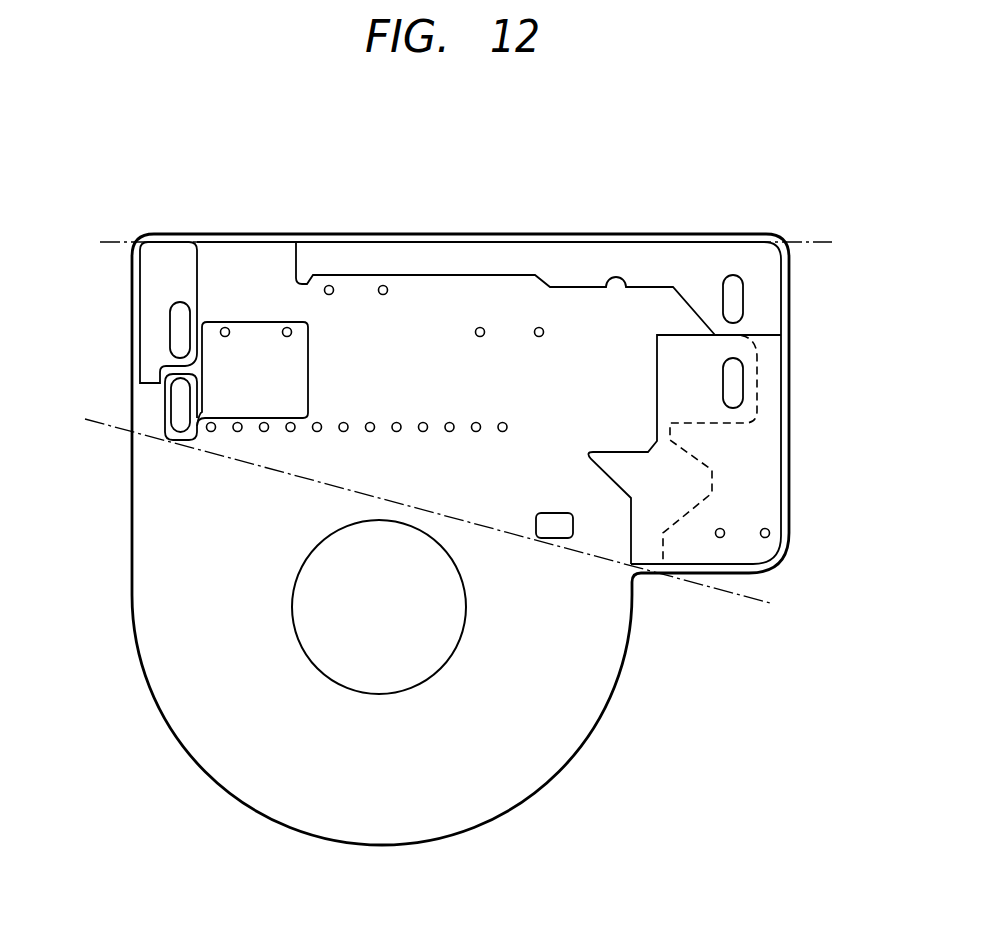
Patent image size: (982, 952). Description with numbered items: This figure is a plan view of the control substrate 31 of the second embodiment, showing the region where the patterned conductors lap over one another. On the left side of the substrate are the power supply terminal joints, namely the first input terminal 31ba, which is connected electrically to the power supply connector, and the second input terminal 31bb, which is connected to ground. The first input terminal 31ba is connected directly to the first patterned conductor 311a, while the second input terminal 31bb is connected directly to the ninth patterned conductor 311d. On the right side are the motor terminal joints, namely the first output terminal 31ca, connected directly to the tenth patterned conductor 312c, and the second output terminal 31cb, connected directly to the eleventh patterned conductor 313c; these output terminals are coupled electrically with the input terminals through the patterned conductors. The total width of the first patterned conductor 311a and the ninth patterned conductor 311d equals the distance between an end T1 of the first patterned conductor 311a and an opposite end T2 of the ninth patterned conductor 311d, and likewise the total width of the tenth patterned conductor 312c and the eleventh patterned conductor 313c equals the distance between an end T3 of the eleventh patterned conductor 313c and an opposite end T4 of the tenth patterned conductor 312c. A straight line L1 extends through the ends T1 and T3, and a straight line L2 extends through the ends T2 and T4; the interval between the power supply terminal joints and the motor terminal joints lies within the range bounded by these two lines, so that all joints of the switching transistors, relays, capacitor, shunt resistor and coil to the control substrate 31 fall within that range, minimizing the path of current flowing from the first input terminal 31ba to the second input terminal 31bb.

The control substrate 31 is at (545, 838).
The first patterned conductor 311a is at (247, 400).
The ninth patterned conductor 311d is at (157, 263).
The second input terminal 31bb is at (177, 330).
The first input terminal 31ba is at (173, 400).
The second output terminal 31cb is at (730, 303).
The first output terminal 31ca is at (733, 395).
The eleventh patterned conductor 313c is at (740, 258).
The tenth patterned conductor 312c is at (645, 550).
The end of the first patterned conductor T1 is at (180, 240).
The end of the ninth patterned conductor T2 is at (180, 441).
The end of the eleventh patterned conductor T3 is at (540, 243).
The end of the tenth patterned conductor T4 is at (662, 565).
The straight line L1 is at (810, 242).
The straight line L2 is at (750, 600).